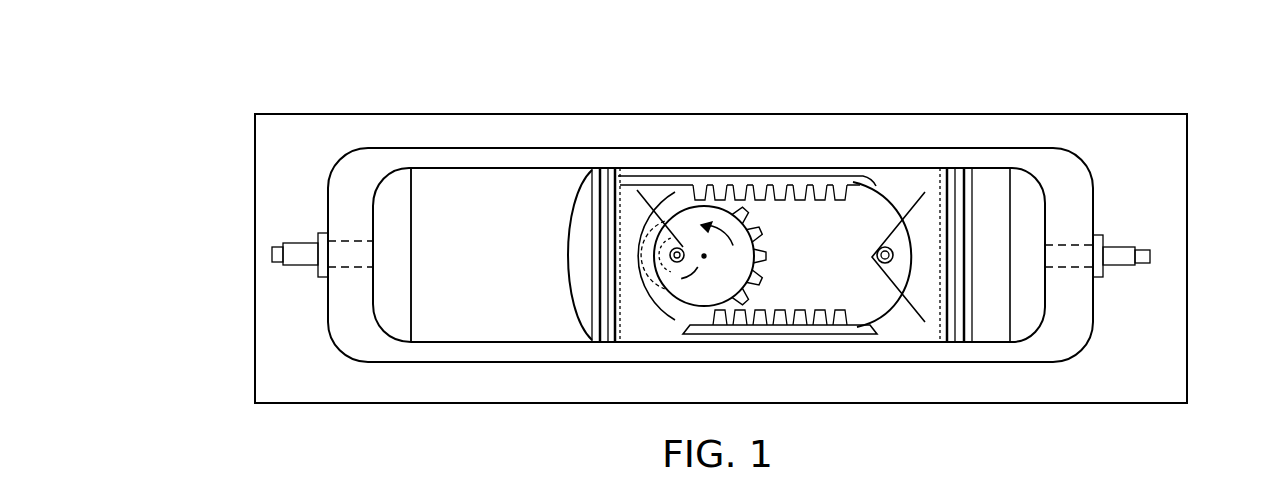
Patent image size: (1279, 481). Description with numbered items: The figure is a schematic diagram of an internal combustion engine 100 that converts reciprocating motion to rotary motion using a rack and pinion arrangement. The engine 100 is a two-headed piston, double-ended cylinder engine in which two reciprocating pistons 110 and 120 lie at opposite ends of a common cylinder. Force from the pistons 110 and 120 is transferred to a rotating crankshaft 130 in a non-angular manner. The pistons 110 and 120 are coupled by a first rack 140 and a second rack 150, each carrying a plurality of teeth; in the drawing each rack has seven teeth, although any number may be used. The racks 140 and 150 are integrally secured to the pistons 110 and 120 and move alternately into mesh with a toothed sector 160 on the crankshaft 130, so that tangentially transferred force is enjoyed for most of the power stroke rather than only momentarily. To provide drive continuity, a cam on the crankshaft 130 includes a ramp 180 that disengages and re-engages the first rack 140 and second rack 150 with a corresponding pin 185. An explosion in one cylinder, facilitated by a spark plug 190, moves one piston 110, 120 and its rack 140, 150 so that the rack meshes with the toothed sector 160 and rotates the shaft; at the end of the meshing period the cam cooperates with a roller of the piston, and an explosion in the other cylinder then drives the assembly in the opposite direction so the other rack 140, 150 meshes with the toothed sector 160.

The internal combustion engine 100 is at (795, 90).
The reciprocating piston 110 is at (987, 295).
The reciprocating piston 120 is at (565, 288).
The crankshaft 130 is at (692, 217).
The first rack 140 is at (868, 172).
The second rack 150 is at (866, 332).
The toothed sector 160 is at (772, 268).
The ramp 180 is at (670, 250).
The pin 185 is at (892, 245).
The spark plug 190 is at (297, 265).